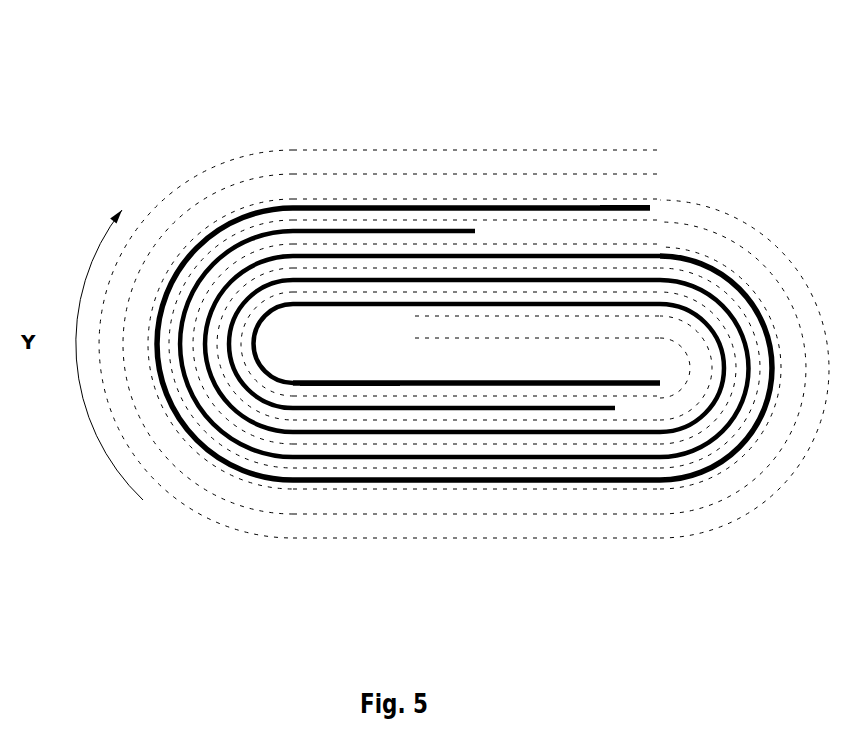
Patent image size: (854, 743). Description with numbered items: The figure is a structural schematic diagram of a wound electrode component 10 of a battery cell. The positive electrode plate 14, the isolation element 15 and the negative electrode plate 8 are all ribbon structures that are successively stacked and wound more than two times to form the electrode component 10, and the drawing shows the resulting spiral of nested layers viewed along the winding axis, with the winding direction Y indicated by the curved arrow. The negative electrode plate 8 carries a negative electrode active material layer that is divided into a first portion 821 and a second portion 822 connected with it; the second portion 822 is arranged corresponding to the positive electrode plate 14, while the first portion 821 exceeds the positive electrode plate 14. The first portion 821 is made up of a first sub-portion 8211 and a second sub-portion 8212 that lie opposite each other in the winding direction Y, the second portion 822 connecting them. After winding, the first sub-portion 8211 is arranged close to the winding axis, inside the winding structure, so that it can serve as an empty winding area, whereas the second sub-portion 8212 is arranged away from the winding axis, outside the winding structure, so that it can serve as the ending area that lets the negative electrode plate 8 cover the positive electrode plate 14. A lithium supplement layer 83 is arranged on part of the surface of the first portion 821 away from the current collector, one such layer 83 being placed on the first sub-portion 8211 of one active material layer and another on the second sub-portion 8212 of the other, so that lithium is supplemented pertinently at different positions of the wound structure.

The electrode component 10 is at (68, 83).
The negative electrode plate 8 is at (237, 212).
The positive electrode plate 14 is at (308, 228).
The second portion 822 is at (388, 275).
The second sub-portion 8212 is at (564, 204).
The first sub-portion 8211 is at (284, 388).
The first portion 821 is at (741, 631).
The lithium supplement layer 83 is at (617, 200).
The isolation element 15 is at (733, 212).